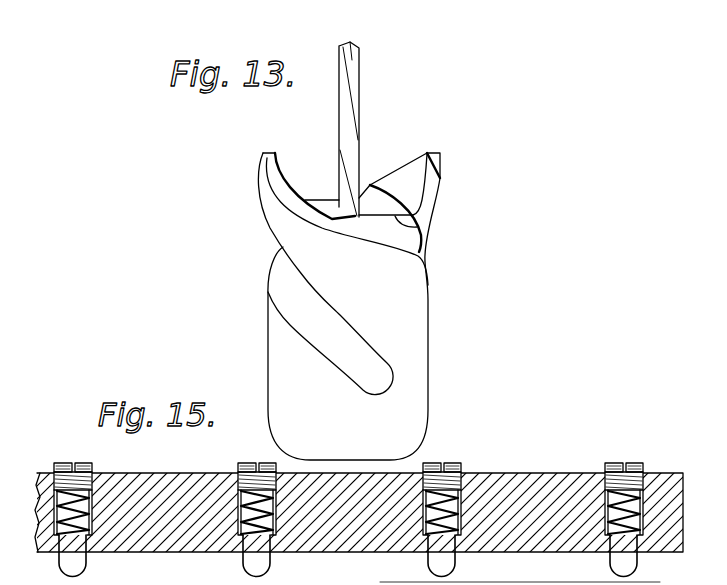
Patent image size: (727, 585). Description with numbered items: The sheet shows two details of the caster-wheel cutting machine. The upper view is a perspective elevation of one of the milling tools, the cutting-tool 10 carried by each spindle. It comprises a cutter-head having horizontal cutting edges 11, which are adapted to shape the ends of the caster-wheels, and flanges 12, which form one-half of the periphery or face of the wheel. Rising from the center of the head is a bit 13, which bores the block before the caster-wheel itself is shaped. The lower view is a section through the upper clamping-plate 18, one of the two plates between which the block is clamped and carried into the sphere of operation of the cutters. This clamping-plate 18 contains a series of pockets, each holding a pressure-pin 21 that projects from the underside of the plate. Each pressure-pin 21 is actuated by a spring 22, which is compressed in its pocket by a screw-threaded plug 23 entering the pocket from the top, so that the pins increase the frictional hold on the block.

In FIG. 13, the cutting-tool 10 is at (403, 275).
In FIG. 13, the horizontal cutting edges 11 is at (313, 198).
In FIG. 13, the flanges 12 is at (287, 176).
In FIG. 13, the bit 13 is at (357, 90).
In FIG. 15, the clamping-plate 18 is at (557, 480).
In FIG. 15, the pressure-pin 21 is at (470, 556).
In FIG. 15, the spring 22 is at (479, 483).
In FIG. 15, the screw-threaded plug 23 is at (455, 455).